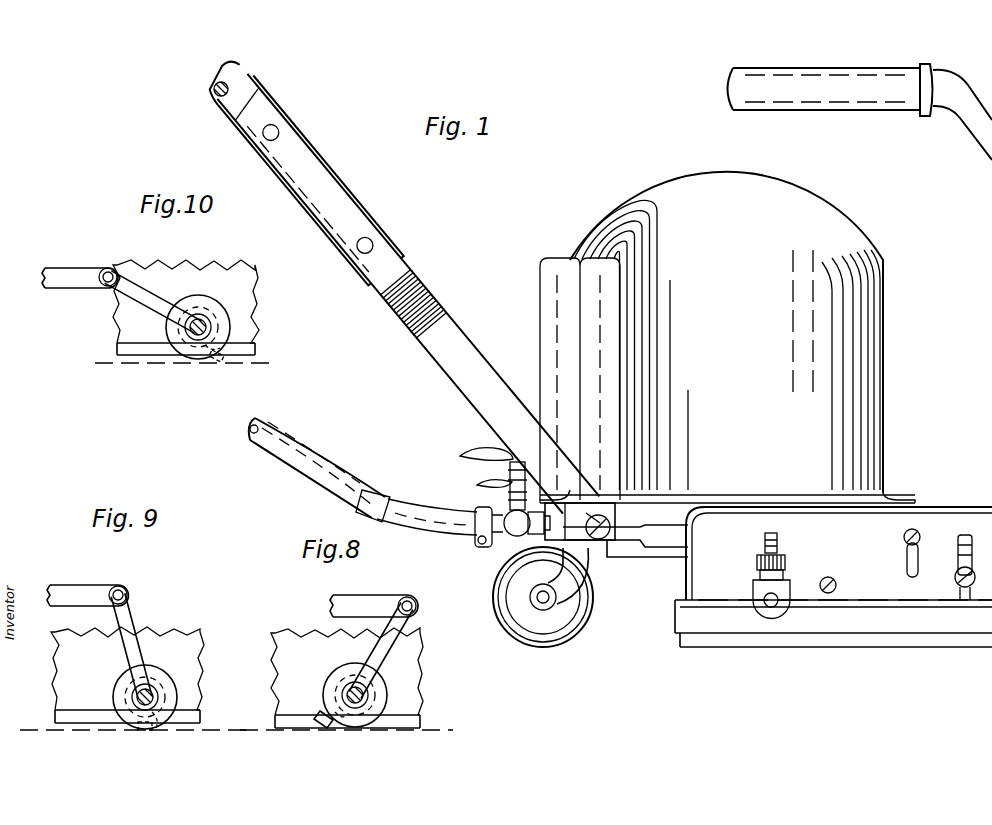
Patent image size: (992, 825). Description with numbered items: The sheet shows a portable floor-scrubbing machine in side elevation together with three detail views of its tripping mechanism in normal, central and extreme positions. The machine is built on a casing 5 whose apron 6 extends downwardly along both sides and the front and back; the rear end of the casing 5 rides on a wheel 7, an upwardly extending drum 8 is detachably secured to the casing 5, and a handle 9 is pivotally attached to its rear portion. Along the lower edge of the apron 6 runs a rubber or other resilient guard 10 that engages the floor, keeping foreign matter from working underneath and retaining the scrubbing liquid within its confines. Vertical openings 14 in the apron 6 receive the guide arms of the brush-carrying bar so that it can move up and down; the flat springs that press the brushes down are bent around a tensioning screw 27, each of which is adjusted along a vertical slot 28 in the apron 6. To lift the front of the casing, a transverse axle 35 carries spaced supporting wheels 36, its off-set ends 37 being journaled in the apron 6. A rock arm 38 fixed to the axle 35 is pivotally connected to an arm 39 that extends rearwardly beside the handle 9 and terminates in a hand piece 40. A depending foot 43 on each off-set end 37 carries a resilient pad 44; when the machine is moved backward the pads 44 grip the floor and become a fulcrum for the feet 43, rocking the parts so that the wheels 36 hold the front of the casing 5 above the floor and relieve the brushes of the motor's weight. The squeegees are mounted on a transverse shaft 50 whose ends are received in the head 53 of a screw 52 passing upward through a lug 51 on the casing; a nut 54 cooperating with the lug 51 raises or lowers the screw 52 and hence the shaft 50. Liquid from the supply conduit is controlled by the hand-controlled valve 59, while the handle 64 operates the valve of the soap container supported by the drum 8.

In FIG. 1, the casing 5 is at (873, 525).
In FIG. 10, the apron 6 is at (232, 288).
In FIG. 9, the apron 6 is at (160, 640).
In FIG. 8, the apron 6 is at (298, 645).
In FIG. 1, the wheel 7 is at (557, 622).
In FIG. 1, the drum 8 is at (658, 222).
In FIG. 1, the handle 9 is at (240, 85).
In FIG. 10, the resilient guard 10 is at (140, 349).
In FIG. 9, the resilient guard 10 is at (85, 720).
In FIG. 8, the resilient guard 10 is at (346, 722).
In FIG. 1, the vertical openings 14 is at (958, 568).
In FIG. 1, the tensioning screw 27 is at (904, 539).
In FIG. 1, the vertical slot 28 is at (908, 561).
In FIG. 10, the transverse axle 35 is at (188, 340).
In FIG. 9, the transverse axle 35 is at (140, 693).
In FIG. 8, the transverse axle 35 is at (350, 690).
In FIG. 10, the supporting wheels 36 is at (222, 327).
In FIG. 9, the supporting wheels 36 is at (165, 712).
In FIG. 8, the supporting wheels 36 is at (365, 716).
In FIG. 10, the off-set ends 37 is at (206, 318).
In FIG. 9, the off-set ends 37 is at (165, 692).
In FIG. 8, the off-set ends 37 is at (376, 700).
In FIG. 10, the rock arm 38 is at (150, 303).
In FIG. 9, the rock arm 38 is at (125, 620).
In FIG. 8, the rock arm 38 is at (378, 655).
In FIG. 1, the arm 39 is at (655, 535).
In FIG. 10, the arm 39 is at (92, 273).
In FIG. 9, the arm 39 is at (90, 585).
In FIG. 8, the arm 39 is at (348, 607).
In FIG. 1, the hand piece 40 is at (565, 525).
In FIG. 10, the depending foot 43 is at (200, 360).
In FIG. 9, the depending foot 43 is at (156, 728).
In FIG. 8, the depending foot 43 is at (350, 718).
In FIG. 10, the resilient pad 44 is at (216, 360).
In FIG. 9, the resilient pad 44 is at (140, 727).
In FIG. 8, the resilient pad 44 is at (328, 722).
In FIG. 1, the transverse shaft 50 is at (770, 606).
In FIG. 1, the lug 51 is at (786, 567).
In FIG. 1, the screw 52 is at (778, 541).
In FIG. 1, the head 53 is at (756, 593).
In FIG. 1, the nut 54 is at (757, 561).
In FIG. 1, the hand-controlled valve 59 is at (488, 486).
In FIG. 1, the handle 64 is at (478, 452).